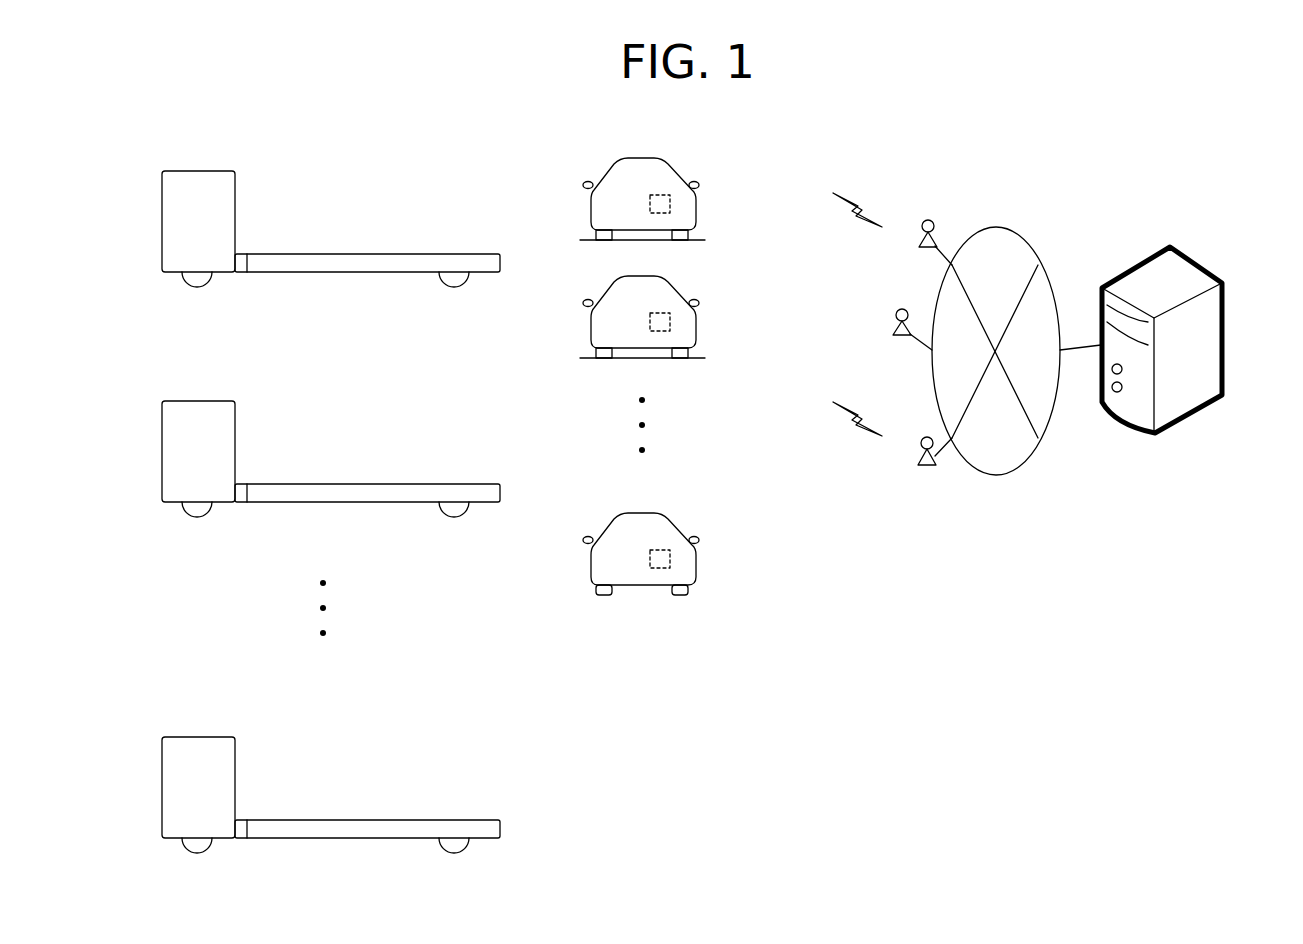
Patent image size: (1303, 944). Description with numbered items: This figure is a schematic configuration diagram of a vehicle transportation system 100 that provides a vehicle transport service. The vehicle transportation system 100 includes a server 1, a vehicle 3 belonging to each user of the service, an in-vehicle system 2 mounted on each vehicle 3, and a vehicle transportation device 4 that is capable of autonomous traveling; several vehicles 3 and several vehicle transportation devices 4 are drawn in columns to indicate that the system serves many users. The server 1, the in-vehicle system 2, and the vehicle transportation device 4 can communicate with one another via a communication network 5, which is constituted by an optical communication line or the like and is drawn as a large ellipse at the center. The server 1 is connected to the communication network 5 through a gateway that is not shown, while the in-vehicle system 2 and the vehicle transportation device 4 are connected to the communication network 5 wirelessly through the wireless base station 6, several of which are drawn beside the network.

The vehicle transportation system 100 is at (1118, 171).
The server 1 is at (1210, 266).
The in-vehicle system 2 is at (670, 205).
The vehicle 3 is at (667, 162).
The vehicle transportation device 4 is at (183, 171).
The communication network 5 is at (996, 227).
The wireless base station 6 is at (924, 220).